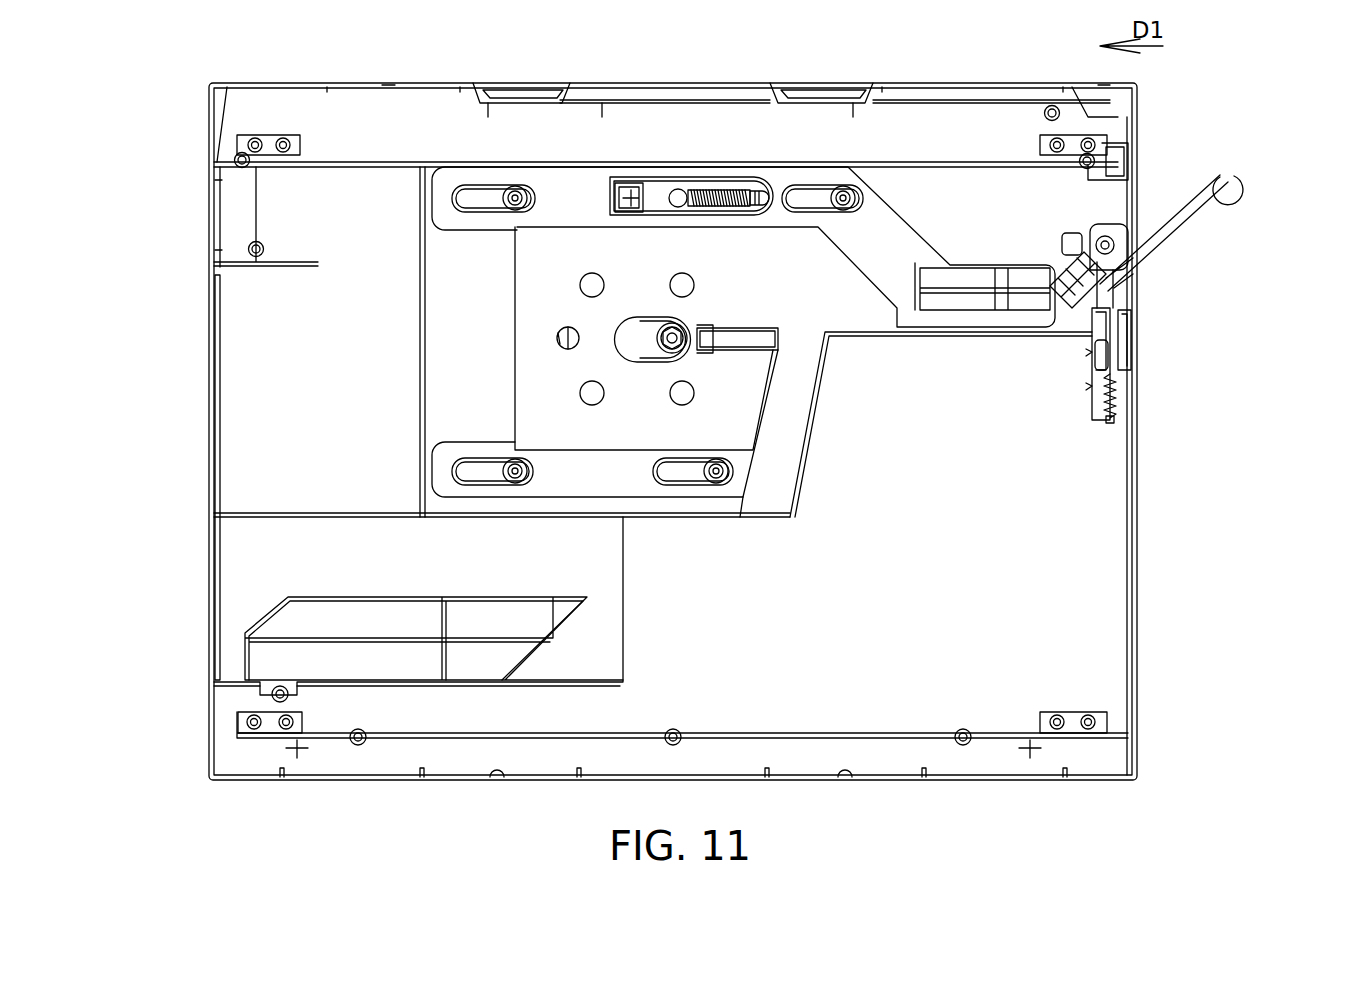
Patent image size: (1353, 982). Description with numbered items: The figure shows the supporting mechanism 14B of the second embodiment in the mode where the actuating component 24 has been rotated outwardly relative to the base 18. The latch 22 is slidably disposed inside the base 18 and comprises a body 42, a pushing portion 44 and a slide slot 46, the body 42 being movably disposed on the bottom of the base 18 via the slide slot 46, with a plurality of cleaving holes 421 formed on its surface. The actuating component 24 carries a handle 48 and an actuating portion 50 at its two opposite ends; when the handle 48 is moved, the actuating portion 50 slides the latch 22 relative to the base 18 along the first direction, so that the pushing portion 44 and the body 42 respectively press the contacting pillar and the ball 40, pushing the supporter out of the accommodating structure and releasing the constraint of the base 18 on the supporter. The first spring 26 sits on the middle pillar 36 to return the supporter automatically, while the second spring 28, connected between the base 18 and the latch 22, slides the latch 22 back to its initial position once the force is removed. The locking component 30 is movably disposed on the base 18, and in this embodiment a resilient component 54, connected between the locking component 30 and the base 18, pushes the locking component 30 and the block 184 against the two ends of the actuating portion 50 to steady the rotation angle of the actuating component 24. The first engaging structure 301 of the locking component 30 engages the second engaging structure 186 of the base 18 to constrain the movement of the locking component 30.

The supporting mechanism 14B is at (153, 223).
The base 18 is at (253, 417).
The latch 22 is at (838, 362).
The actuating component 24 is at (1253, 113).
The first spring 26 is at (663, 352).
The second spring 28 is at (711, 196).
The locking component 30 is at (1110, 325).
The first engaging structure 301 is at (1110, 357).
The middle pillar 36 is at (667, 322).
The ball 40 is at (592, 284).
The body 42 is at (538, 278).
The cleaving hole 421 is at (546, 343).
The pushing portion 44 is at (747, 336).
The slide slot 46 is at (473, 196).
The handle 48 is at (1236, 170).
The actuating portion 50 is at (1108, 226).
The resilient component 54 is at (1112, 398).
The block 184 is at (1072, 236).
The second engaging structure 186 is at (1070, 358).